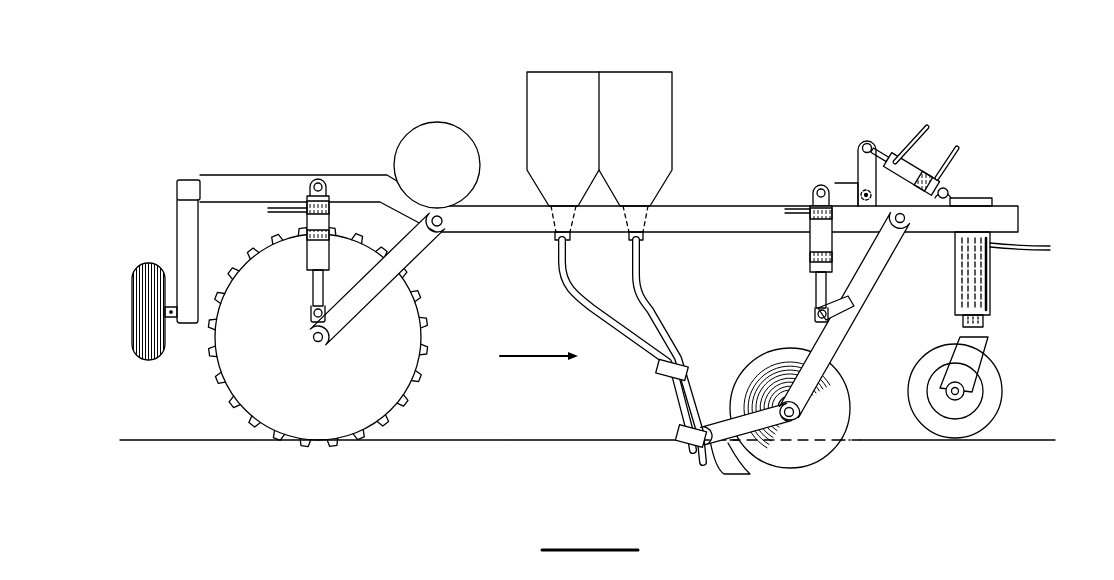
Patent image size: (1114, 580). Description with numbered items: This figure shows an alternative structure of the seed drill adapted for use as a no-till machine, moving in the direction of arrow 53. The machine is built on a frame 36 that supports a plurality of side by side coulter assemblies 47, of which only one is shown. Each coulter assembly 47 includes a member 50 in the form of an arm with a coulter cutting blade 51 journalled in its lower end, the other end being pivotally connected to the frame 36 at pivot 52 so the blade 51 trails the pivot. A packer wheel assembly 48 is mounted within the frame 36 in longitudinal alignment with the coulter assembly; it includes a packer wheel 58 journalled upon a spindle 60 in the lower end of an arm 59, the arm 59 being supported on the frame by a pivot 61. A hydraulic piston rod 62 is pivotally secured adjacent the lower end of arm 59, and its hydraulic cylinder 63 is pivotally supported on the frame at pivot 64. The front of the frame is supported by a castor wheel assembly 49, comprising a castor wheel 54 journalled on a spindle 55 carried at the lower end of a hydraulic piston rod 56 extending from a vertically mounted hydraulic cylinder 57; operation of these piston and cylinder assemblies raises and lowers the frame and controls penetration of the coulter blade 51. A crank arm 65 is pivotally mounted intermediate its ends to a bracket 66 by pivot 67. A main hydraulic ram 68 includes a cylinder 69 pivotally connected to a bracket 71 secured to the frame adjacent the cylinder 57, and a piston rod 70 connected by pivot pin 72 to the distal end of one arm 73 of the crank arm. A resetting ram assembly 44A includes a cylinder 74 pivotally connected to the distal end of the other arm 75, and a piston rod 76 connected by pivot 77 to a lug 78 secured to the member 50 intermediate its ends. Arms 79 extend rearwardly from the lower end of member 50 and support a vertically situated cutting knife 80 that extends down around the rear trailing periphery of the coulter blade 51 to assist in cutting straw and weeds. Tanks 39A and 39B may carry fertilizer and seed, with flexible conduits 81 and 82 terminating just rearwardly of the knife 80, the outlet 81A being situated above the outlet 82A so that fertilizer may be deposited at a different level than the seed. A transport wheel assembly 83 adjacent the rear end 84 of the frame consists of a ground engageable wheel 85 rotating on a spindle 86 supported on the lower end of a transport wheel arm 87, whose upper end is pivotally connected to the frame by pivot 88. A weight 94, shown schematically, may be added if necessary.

The frame 36 is at (716, 215).
The tank 39A is at (528, 96).
The tank 39B is at (656, 110).
The resetting ram assembly 44A is at (810, 278).
The coulter assembly 47 is at (844, 381).
The packer wheel assembly 48 is at (449, 329).
The castor wheel assembly 49 is at (1028, 368).
The member 50 is at (868, 295).
The coulter cutting blade 51 is at (840, 416).
The pivot 52 is at (900, 228).
The arrow 53 is at (540, 360).
The castor wheel 54 is at (995, 414).
The spindle 55 is at (962, 392).
The hydraulic piston rod 56 is at (965, 332).
The hydraulic cylinder 57 is at (992, 292).
The packer wheel 58 is at (255, 393).
The arm 59 is at (360, 315).
The spindle 60 is at (309, 338).
The pivot 61 is at (445, 221).
The hydraulic piston rod 62 is at (313, 298).
The hydraulic cylinder 63 is at (307, 255).
The pivot 64 is at (327, 188).
The crank arm 65 is at (829, 168).
The bracket 66 is at (872, 206).
The pivot 67 is at (874, 195).
The main hydraulic ram 68 is at (924, 158).
The cylinder 69 is at (950, 172).
The piston rod 70 is at (886, 155).
The bracket 71 is at (955, 192).
The pivot pin 72 is at (866, 143).
The arm 73 is at (862, 165).
The cylinder 74 is at (810, 250).
The arm 75 is at (826, 187).
The piston rod 76 is at (817, 305).
The pivot 77 is at (817, 318).
The lug 78 is at (852, 310).
The arms 79 is at (782, 420).
The cutting knife 80 is at (734, 470).
The flexible conduit 81 is at (577, 284).
The outlet 81A is at (680, 452).
The flexible conduit 82 is at (655, 286).
The outlet 82A is at (695, 470).
The transport wheel assembly 83 is at (128, 265).
The rear end 84 is at (225, 178).
The ground engageable wheel 85 is at (150, 353).
The spindle 86 is at (173, 314).
The transport wheel arm 87 is at (185, 233).
The pivot 88 is at (177, 190).
The weight 94 is at (440, 137).